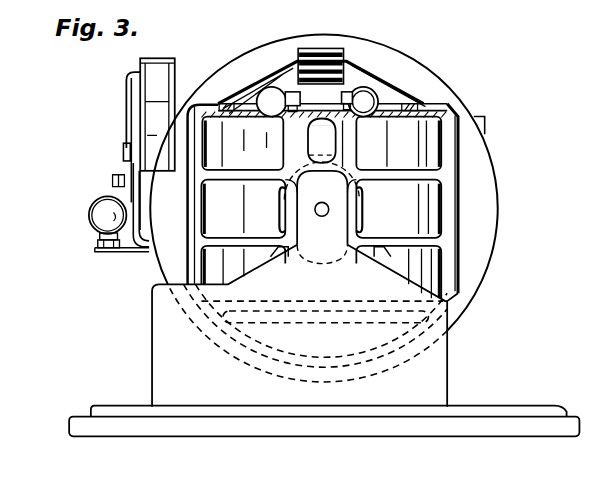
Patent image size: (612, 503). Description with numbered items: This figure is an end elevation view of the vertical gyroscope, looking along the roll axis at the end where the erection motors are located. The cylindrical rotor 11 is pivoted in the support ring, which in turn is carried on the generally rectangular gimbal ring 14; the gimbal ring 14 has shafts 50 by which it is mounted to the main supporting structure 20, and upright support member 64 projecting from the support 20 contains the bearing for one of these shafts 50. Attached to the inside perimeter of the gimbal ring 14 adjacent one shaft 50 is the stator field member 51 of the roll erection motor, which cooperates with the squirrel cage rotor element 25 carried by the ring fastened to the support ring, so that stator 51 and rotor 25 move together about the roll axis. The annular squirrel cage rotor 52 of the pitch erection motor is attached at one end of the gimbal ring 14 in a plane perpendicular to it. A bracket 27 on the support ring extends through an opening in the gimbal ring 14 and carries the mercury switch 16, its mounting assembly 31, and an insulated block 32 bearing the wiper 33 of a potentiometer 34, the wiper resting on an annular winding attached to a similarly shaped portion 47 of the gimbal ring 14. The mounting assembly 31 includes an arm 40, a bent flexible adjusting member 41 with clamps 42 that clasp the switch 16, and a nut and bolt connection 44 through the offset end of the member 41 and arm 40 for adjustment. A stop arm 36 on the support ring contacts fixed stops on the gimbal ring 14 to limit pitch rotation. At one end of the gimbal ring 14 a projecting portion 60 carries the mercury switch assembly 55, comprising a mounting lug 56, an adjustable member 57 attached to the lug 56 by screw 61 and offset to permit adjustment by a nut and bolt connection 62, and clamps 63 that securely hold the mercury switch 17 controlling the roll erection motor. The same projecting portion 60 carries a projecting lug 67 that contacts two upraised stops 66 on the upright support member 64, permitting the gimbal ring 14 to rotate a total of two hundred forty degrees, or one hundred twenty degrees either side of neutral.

The rotor 11 is at (418, 150).
The gimbal ring 14 is at (188, 250).
The mercury switch 16 is at (98, 212).
The mercury switch 17 is at (378, 92).
The supporting structure 20 is at (536, 410).
The squirrel cage rotor element 25 is at (346, 47).
The bracket 27 is at (136, 250).
The mounting assembly 31 is at (90, 188).
The insulated block 32 is at (125, 151).
The wiper 33 is at (123, 113).
The potentiometer 34 is at (110, 78).
The stop arm 36 is at (488, 116).
The arm 40 is at (95, 248).
The flexible adjusting member 41 is at (96, 236).
The clamps 42 is at (84, 212).
The nut and bolt connection 44 is at (105, 252).
The annular portion of the gimbal ring 47 is at (152, 66).
The shafts 50 is at (322, 214).
The stator field member 51 is at (360, 193).
The squirrel cage rotor 52 is at (485, 182).
The mercury switch assembly 55 is at (268, 123).
The mounting lug 56 is at (372, 130).
The adjustable member 57 is at (308, 112).
The projecting portion 60 is at (343, 150).
The screw 61 is at (343, 97).
The nut and bolt connection 62 is at (287, 101).
The clamps 63 is at (350, 95).
The upright support member 64 is at (431, 360).
The stops 66 is at (278, 245).
The projecting lug 67 is at (326, 138).